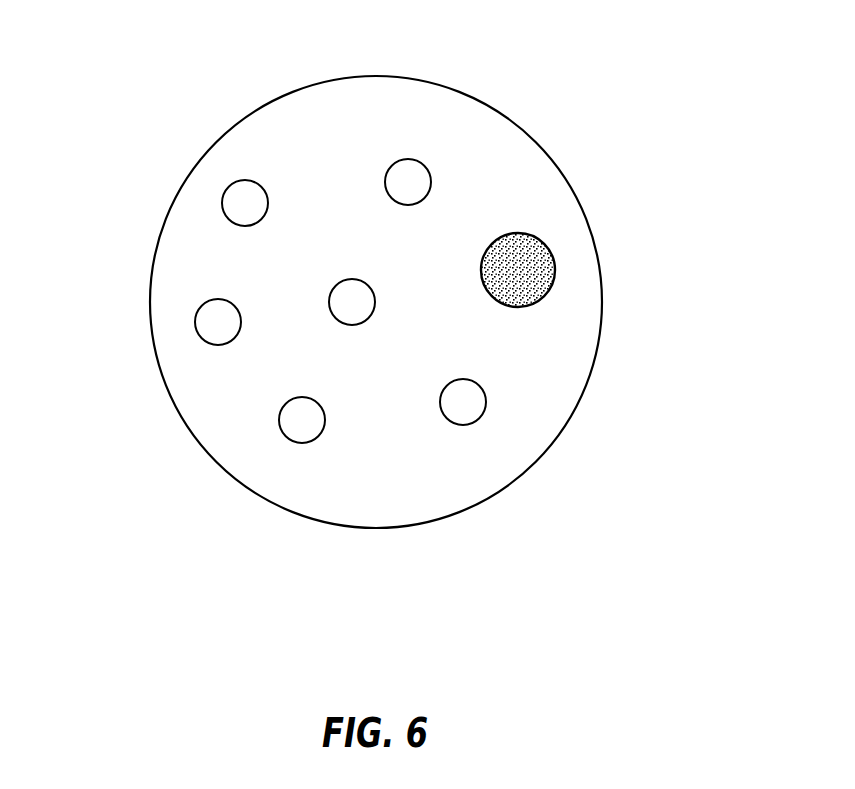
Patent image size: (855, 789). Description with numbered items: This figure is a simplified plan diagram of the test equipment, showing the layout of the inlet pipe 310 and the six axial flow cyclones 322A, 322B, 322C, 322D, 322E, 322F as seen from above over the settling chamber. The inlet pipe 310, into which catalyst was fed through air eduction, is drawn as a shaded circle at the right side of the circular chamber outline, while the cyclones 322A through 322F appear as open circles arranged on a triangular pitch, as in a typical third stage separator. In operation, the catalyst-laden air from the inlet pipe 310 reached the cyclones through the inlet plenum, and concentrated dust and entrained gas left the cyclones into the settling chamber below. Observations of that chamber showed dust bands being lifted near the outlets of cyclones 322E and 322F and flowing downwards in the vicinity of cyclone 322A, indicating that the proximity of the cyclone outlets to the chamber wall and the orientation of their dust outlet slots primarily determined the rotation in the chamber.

The inlet pipe 310 is at (565, 263).
The cyclone 322A is at (463, 378).
The cyclone 322B is at (297, 396).
The cyclone 322C is at (352, 279).
The cyclone 322D is at (195, 321).
The cyclone 322E is at (247, 180).
The cyclone 322F is at (407, 159).